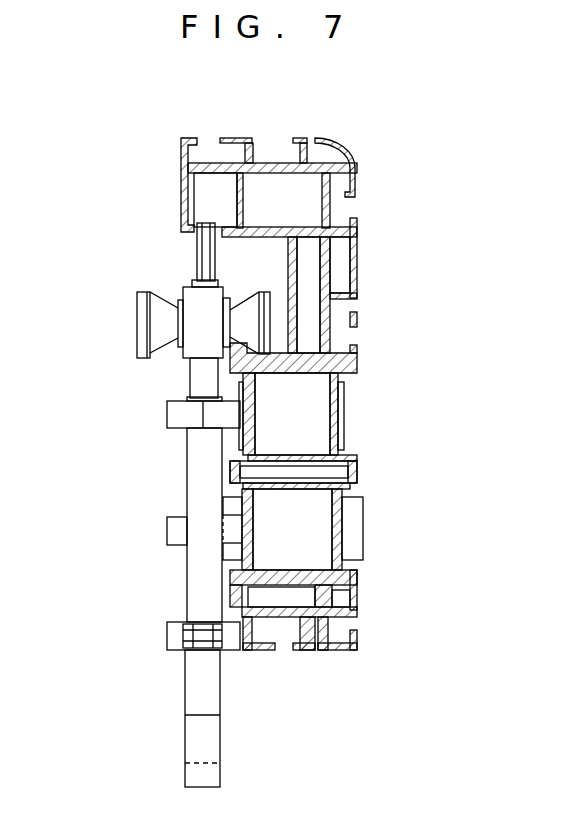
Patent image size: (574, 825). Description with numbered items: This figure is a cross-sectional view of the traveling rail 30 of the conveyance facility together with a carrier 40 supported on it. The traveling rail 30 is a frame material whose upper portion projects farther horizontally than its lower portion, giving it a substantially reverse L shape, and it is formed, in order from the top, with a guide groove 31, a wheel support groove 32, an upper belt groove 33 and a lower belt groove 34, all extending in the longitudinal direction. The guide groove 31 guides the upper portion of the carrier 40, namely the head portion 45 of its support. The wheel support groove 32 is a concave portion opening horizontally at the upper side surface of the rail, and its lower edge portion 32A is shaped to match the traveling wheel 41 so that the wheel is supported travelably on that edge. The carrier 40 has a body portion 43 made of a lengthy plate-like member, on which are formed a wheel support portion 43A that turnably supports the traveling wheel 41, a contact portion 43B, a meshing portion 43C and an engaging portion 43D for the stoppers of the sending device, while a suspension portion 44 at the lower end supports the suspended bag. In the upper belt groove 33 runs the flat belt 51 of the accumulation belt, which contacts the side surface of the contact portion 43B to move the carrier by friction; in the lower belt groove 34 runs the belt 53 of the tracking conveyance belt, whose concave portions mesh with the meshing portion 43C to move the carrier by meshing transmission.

The traveling rail 30 is at (362, 150).
The guide groove 31 is at (210, 232).
The wheel support groove 32 is at (297, 250).
The lower edge portion 32A is at (235, 358).
The upper belt groove 33 is at (240, 473).
The lower belt groove 34 is at (235, 578).
The carrier 40 is at (188, 505).
The traveling wheel 41 is at (144, 318).
The body portion 43 is at (187, 484).
The wheel support portion 43A is at (185, 356).
The contact portion 43B is at (167, 413).
The meshing portion 43C is at (170, 530).
The engaging portion 43D is at (188, 380).
The suspension portion 44 is at (187, 690).
The head portion 45 is at (197, 262).
The belt 51 is at (243, 430).
The belt 53 is at (240, 557).